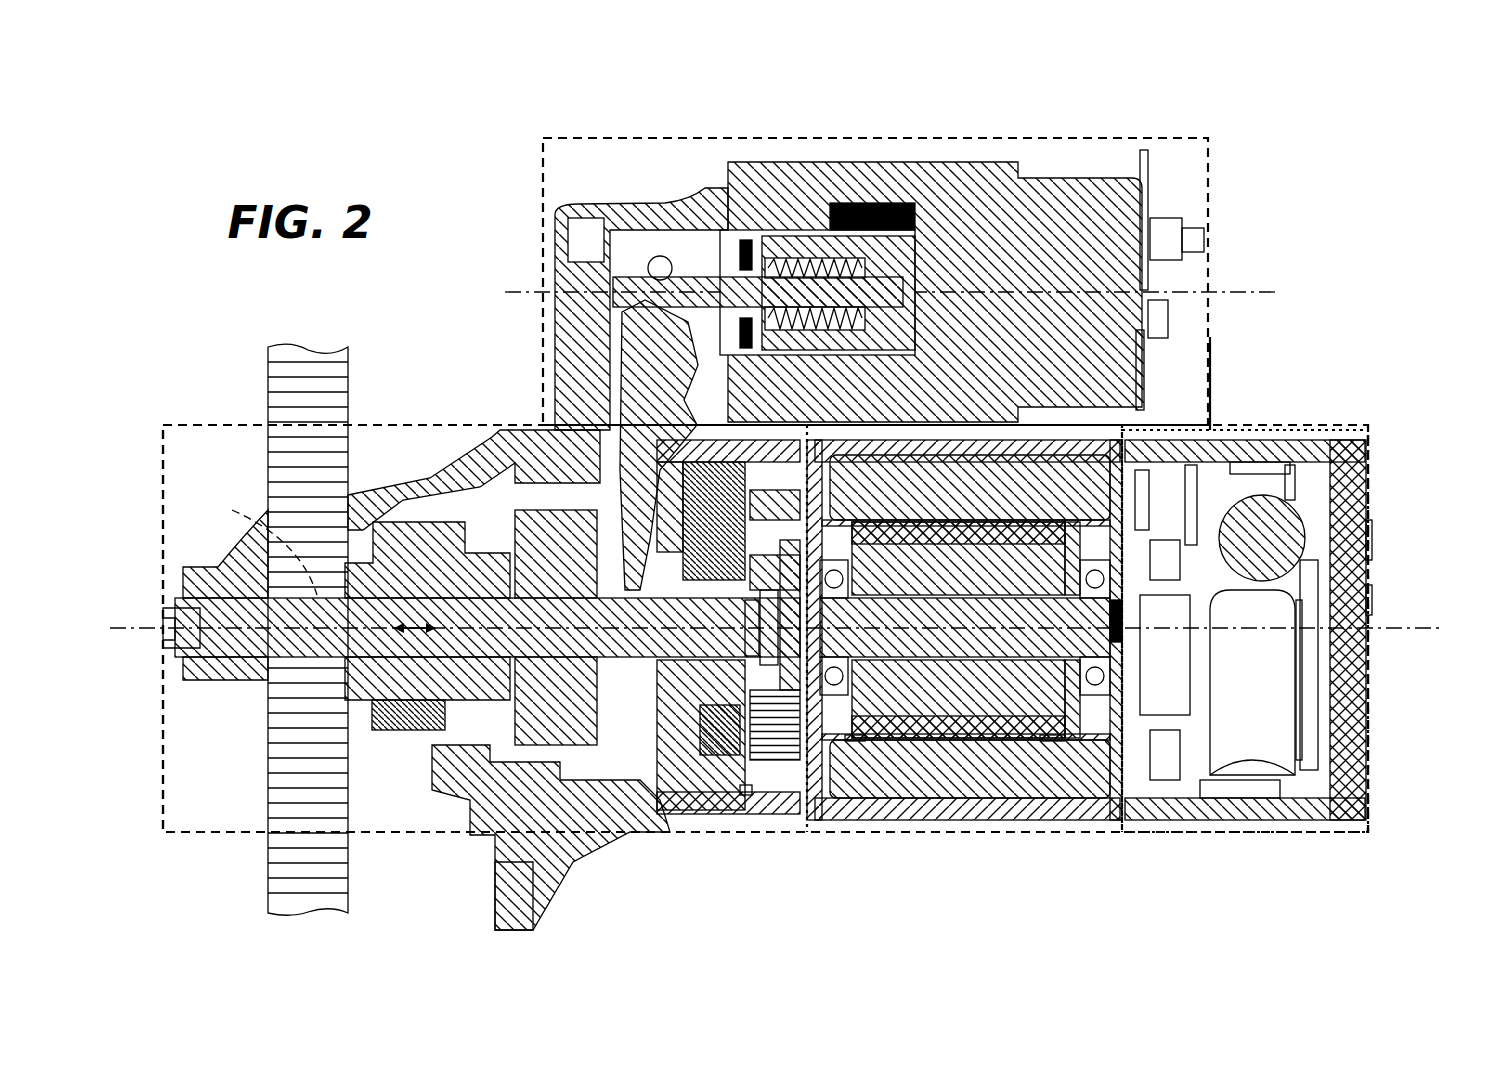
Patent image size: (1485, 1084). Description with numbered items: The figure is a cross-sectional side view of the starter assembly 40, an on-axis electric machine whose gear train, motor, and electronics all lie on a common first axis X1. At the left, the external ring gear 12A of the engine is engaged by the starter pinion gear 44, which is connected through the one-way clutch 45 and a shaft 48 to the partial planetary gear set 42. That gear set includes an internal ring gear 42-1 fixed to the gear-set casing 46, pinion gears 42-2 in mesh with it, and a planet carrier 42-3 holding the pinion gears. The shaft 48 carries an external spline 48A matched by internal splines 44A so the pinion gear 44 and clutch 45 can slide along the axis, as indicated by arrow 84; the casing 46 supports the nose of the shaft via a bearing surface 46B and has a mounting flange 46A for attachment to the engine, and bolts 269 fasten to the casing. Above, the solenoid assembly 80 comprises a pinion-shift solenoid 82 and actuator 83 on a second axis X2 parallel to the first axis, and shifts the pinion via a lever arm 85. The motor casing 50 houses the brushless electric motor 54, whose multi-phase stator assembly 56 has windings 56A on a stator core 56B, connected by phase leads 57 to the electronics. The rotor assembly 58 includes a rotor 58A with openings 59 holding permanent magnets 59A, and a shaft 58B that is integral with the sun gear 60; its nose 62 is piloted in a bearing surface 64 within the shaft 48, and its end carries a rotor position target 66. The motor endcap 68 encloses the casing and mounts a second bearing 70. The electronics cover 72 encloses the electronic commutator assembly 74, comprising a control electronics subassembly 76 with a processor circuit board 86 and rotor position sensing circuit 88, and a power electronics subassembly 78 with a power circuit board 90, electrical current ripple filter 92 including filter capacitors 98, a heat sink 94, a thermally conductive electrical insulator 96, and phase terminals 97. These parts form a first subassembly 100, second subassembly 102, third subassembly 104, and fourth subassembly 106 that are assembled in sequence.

The external ring gear 12A is at (268, 873).
The starter assembly 40 is at (1292, 200).
The partial planetary gear set 42 is at (716, 770).
The internal ring gear 42-1 is at (782, 762).
The pinion gears 42-2 is at (742, 797).
The planet carrier 42-3 is at (757, 720).
The starter pinion gear 44 is at (405, 732).
The internal splines 44A is at (467, 598).
The one-way clutch 45 is at (575, 815).
The gear-set casing 46 is at (575, 863).
The mounting flange 46A is at (495, 875).
The bearing surface 46B is at (170, 647).
The shaft 48 is at (315, 662).
The external spline 48A is at (260, 537).
The motor casing 50 is at (832, 735).
The brushless electric motor 54 is at (833, 792).
The multi-phase stator assembly 56 is at (1067, 782).
The windings 56A is at (934, 786).
The stator core 56B is at (907, 803).
The phase leads 57 is at (1195, 470).
The rotor assembly 58 is at (1068, 718).
The rotor 58A is at (936, 704).
The shaft 58B is at (932, 654).
The openings 59 is at (880, 724).
The permanent magnet 59A is at (1020, 724).
The sun gear 60 is at (780, 720).
The nose 62 is at (758, 676).
The bearing surface 64 is at (745, 612).
The rotor position target 66 is at (1147, 513).
The motor endcap 68 is at (1133, 762).
The second bearing 70 is at (1095, 570).
The electronics cover 72 is at (1312, 800).
The electronic commutator assembly 74 is at (1253, 800).
The control electronics subassembly 76 is at (1118, 615).
The power electronics subassembly 78 is at (1296, 486).
The solenoid assembly 80 is at (958, 186).
The pinion-shift solenoid 82 is at (822, 230).
The actuator 83 is at (877, 203).
The arrow 84 is at (428, 612).
The lever arm 85 is at (625, 357).
The processor circuit board 86 is at (1262, 460).
The rotor position sensing circuit 88 is at (1147, 635).
The power circuit board 90 is at (1322, 705).
The electrical current ripple filter 92 is at (1282, 710).
The heat sink 94 is at (1367, 548).
The thermally conductive electrical insulator 96 is at (1370, 600).
The phase terminals 97 is at (1293, 470).
The filter capacitors 98 is at (1232, 676).
The first subassembly 100 is at (418, 425).
The second subassembly 102 is at (1113, 137).
The third subassembly 104 is at (943, 838).
The fourth subassembly 106 is at (1334, 428).
The bolts 269 is at (1218, 795).
The first axis X1 is at (1410, 630).
The second axis X2 is at (1243, 292).